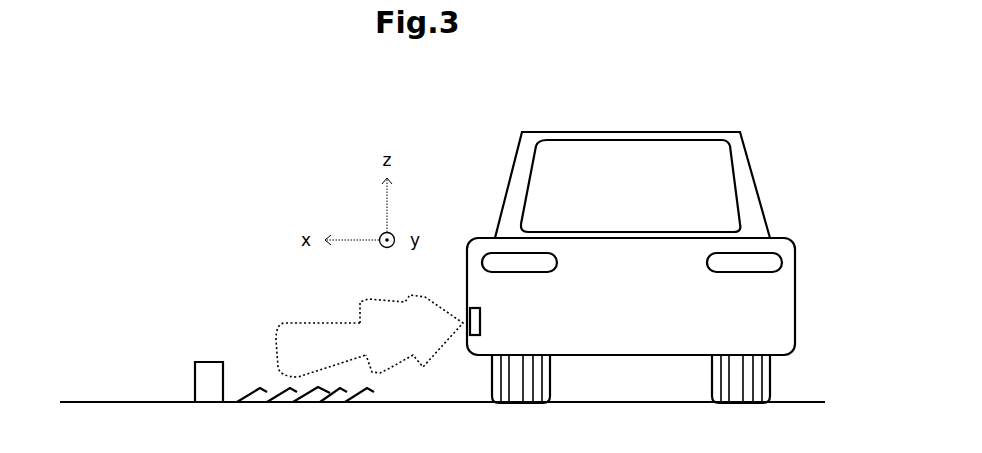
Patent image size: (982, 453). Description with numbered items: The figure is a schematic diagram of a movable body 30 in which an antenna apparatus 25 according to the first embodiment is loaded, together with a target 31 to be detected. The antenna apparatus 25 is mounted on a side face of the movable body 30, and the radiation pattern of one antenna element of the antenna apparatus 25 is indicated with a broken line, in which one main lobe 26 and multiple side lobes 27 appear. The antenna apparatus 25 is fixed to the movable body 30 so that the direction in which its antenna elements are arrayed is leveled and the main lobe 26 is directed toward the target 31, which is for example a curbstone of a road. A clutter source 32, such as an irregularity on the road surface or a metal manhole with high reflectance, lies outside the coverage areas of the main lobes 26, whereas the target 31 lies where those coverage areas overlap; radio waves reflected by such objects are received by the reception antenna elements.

The antenna apparatus 25 is at (508, 317).
The main lobe 26 is at (292, 338).
The side lobes 27 is at (411, 348).
The movable body 30 is at (666, 267).
The target 31 is at (172, 377).
The clutter source 32 is at (303, 384).